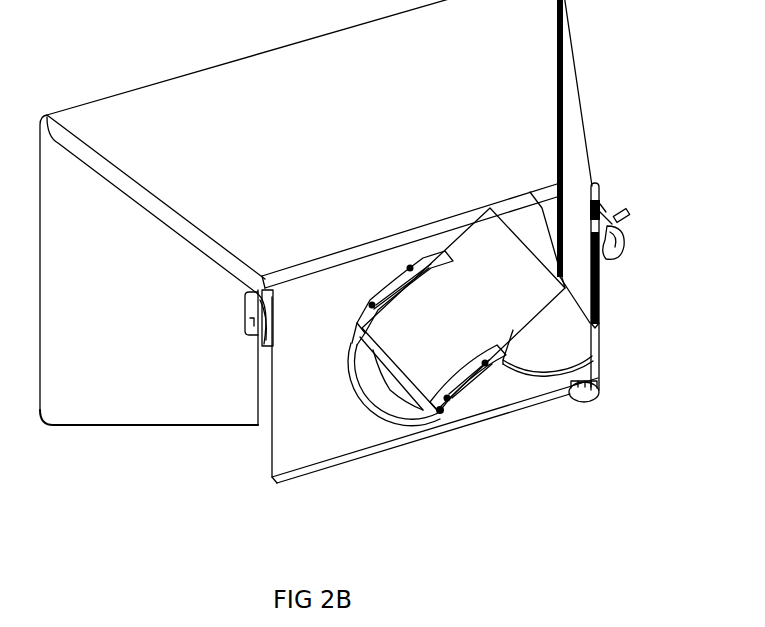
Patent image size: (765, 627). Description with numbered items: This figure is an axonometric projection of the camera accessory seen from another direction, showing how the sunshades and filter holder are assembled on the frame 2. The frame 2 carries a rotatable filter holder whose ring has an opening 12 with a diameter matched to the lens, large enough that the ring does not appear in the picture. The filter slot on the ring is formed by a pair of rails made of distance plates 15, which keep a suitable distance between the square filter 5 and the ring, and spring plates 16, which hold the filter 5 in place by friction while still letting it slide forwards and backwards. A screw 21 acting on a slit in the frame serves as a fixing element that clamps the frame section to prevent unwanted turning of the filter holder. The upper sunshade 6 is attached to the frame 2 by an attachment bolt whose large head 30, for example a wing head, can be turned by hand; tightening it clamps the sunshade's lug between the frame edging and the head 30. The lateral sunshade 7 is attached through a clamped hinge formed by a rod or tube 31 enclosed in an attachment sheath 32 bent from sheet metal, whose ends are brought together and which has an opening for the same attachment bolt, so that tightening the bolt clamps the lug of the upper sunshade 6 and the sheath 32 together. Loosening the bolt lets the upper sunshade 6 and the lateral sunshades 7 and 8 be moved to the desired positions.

The frame 2 is at (553, 385).
The square filter 5 is at (425, 347).
The upper sunshade 6 is at (488, 135).
The lateral sunshade 7 is at (202, 367).
The lateral sunshade 8 is at (570, 163).
The opening 12 is at (388, 388).
The distance plates 15 is at (440, 410).
The spring plates 16 is at (468, 385).
The screw 21 is at (583, 393).
The head 30 is at (617, 237).
The rod or tube 31 is at (600, 326).
The attachment sheath 32 is at (603, 206).